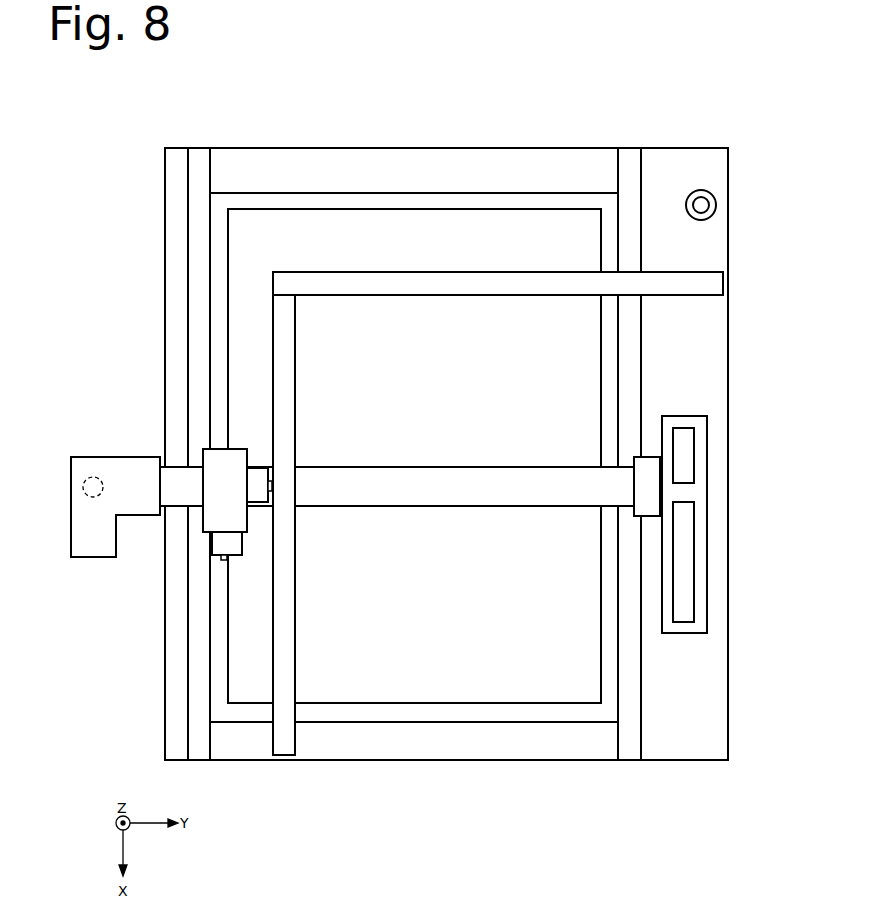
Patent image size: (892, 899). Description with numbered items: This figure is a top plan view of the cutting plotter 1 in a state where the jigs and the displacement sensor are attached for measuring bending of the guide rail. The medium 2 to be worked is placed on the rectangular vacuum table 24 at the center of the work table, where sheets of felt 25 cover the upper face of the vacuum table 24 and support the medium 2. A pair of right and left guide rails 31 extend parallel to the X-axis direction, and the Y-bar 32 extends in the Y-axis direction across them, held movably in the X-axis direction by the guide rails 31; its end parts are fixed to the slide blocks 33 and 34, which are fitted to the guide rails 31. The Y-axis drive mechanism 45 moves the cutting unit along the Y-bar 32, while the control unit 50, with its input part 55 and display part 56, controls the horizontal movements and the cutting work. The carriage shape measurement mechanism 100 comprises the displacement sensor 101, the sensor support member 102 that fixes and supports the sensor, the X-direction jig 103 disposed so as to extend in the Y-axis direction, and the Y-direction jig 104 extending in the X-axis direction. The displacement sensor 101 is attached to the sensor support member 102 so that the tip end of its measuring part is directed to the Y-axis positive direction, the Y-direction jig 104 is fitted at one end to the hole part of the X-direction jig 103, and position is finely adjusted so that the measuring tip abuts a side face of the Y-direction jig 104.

The cutting plotter 1 is at (502, 112).
The medium to be worked 2 is at (430, 624).
The vacuum table 24 is at (414, 759).
The felt 25 is at (435, 713).
The guide rail 31 is at (443, 448).
The Y-bar 32 is at (433, 478).
The slide block 33 is at (653, 497).
The slide block 34 is at (91, 548).
The Y-axis drive mechanism 45 is at (96, 476).
The control unit 50 is at (723, 524).
The input part 55 is at (687, 587).
The display part 56 is at (685, 463).
The carriage shape measurement mechanism 100 is at (279, 512).
The displacement sensor 101 is at (260, 478).
The sensor support member 102 is at (235, 455).
The X-direction jig 103 is at (448, 280).
The Y-direction jig 104 is at (287, 665).